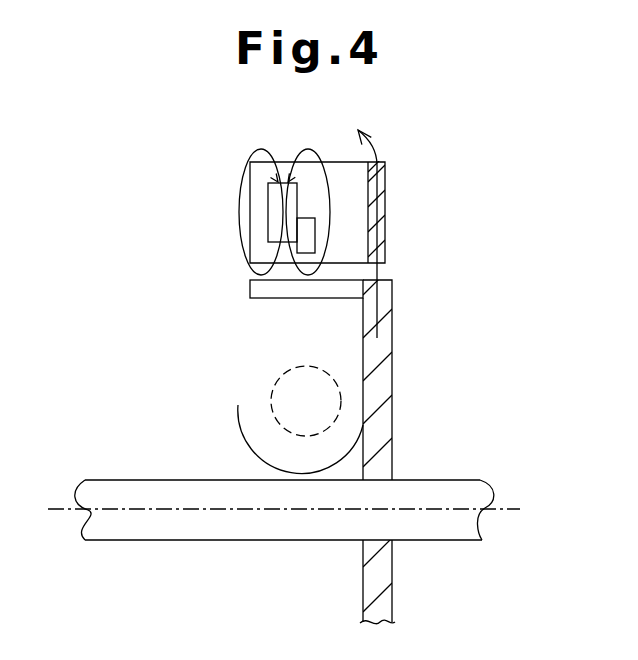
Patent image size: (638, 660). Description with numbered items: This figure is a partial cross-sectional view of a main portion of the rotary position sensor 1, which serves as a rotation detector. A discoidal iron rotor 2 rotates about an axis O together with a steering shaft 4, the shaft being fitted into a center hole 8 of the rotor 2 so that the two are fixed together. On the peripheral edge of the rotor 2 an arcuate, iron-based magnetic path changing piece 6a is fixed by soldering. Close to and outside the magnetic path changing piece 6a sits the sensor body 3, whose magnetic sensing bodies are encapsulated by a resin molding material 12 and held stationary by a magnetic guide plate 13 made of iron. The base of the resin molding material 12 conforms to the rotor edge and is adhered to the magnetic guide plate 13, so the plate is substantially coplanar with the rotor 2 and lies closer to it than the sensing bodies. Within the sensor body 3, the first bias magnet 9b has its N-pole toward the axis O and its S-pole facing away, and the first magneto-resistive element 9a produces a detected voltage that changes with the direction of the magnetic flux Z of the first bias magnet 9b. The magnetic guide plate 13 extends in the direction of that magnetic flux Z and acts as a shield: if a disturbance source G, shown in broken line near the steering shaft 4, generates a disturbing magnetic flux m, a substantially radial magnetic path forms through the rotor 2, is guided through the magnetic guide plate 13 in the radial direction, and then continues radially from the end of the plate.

The rotary position sensor 1 is at (488, 252).
The rotor 2 is at (383, 376).
The sensor body 3 is at (262, 177).
The steering shaft 4 is at (450, 497).
The magnetic path changing piece 6a is at (250, 290).
The center hole 8 is at (383, 540).
The first magneto-resistive element 9a is at (306, 253).
The first bias magnet 9b is at (268, 214).
The resin molding material 12 is at (255, 200).
The magnetic guide plate 13 is at (382, 218).
The disturbance source G is at (272, 386).
The disturbing magnetic flux m is at (247, 443).
The axis O is at (63, 508).
The magnetic flux Z is at (318, 148).